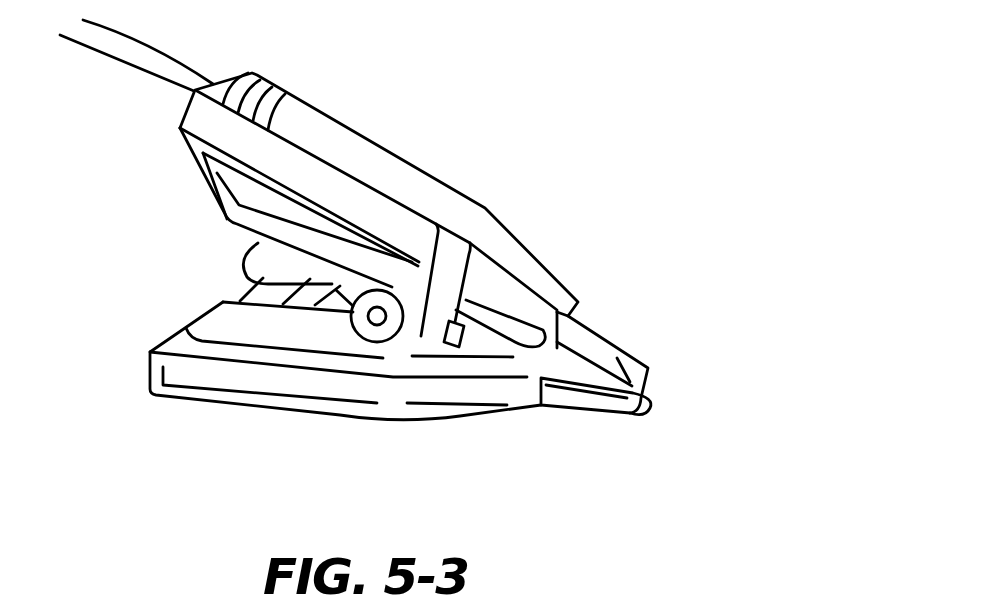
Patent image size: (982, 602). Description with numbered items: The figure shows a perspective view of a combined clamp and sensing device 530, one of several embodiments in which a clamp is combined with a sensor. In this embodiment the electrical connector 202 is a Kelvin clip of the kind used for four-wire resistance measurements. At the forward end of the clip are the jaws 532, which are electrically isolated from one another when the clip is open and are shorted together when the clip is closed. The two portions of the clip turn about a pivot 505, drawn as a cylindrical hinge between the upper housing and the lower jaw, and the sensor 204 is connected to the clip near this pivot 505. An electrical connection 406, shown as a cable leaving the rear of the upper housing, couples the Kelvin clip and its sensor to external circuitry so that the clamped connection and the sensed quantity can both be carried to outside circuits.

The electrical connector 202 is at (283, 423).
The sensor 204 is at (458, 304).
The electrical connection 406 is at (122, 62).
The pivot 505 is at (377, 318).
The combined clamp and sensing device 530 is at (434, 102).
The jaws 532 is at (653, 370).